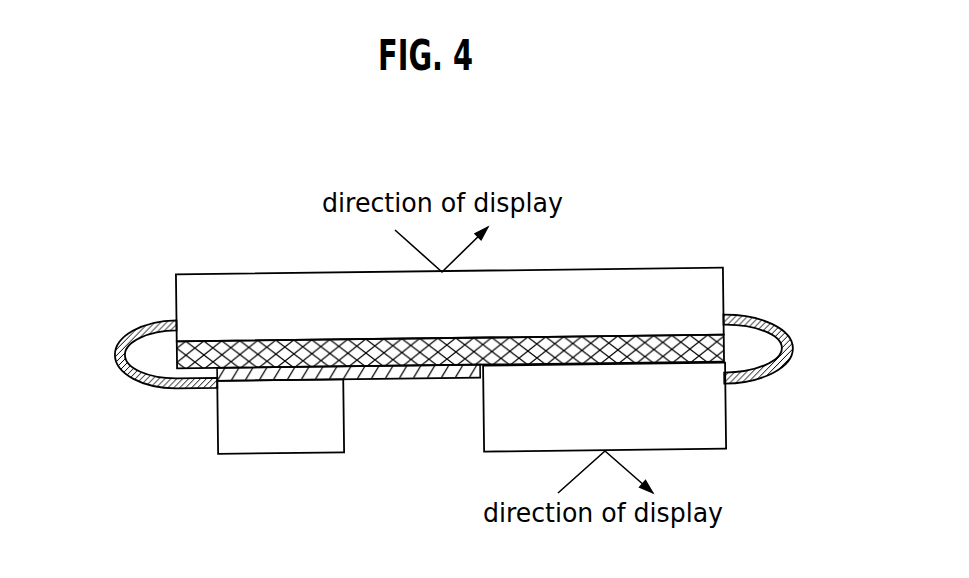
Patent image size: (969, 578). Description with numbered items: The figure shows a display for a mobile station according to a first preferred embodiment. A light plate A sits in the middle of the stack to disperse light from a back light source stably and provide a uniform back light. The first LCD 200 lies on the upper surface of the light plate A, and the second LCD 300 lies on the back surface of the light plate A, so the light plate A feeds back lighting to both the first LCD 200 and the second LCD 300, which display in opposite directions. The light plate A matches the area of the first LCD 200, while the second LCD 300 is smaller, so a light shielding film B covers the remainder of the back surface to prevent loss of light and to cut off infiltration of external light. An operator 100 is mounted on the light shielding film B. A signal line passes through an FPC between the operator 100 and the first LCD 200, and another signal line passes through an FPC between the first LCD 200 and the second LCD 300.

The operator 100 is at (275, 448).
The first LCD 200 is at (621, 293).
The second LCD 300 is at (708, 428).
The light plate A is at (363, 376).
The light shielding film B is at (408, 372).
The FPC (flexible wire) FPC is at (130, 373).